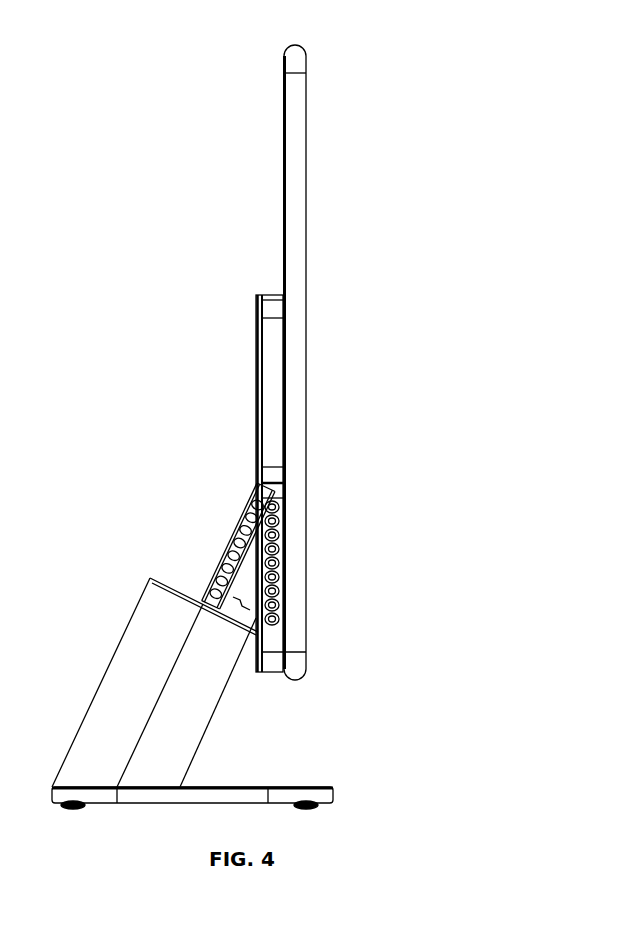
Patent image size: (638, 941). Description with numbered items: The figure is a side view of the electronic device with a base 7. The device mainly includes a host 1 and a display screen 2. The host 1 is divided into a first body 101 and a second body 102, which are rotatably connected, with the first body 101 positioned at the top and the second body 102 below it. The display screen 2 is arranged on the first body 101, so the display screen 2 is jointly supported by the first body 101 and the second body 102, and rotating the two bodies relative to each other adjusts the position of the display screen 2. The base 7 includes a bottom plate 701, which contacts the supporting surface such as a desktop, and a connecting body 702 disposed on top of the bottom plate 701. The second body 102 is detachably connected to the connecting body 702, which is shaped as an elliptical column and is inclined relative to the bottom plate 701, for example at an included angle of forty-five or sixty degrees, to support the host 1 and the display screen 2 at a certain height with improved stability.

The host 1 is at (85, 350).
The display screen 2 is at (276, 150).
The base 7 is at (400, 693).
The first body 101 is at (246, 381).
The second body 102 is at (214, 543).
The bottom plate 701 is at (300, 782).
The connecting body 702 is at (246, 686).